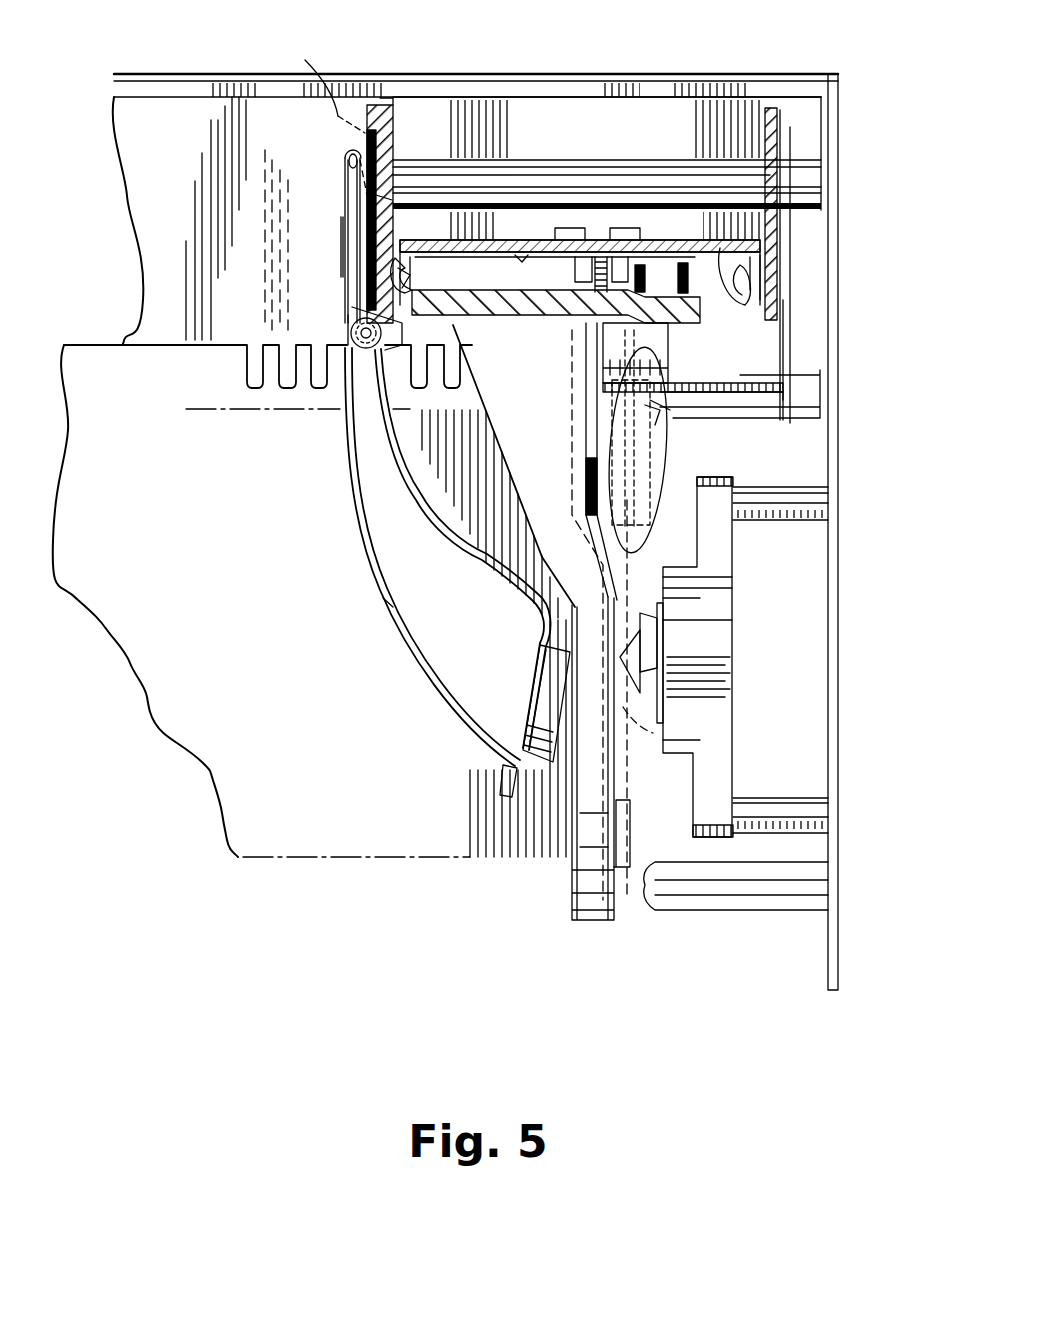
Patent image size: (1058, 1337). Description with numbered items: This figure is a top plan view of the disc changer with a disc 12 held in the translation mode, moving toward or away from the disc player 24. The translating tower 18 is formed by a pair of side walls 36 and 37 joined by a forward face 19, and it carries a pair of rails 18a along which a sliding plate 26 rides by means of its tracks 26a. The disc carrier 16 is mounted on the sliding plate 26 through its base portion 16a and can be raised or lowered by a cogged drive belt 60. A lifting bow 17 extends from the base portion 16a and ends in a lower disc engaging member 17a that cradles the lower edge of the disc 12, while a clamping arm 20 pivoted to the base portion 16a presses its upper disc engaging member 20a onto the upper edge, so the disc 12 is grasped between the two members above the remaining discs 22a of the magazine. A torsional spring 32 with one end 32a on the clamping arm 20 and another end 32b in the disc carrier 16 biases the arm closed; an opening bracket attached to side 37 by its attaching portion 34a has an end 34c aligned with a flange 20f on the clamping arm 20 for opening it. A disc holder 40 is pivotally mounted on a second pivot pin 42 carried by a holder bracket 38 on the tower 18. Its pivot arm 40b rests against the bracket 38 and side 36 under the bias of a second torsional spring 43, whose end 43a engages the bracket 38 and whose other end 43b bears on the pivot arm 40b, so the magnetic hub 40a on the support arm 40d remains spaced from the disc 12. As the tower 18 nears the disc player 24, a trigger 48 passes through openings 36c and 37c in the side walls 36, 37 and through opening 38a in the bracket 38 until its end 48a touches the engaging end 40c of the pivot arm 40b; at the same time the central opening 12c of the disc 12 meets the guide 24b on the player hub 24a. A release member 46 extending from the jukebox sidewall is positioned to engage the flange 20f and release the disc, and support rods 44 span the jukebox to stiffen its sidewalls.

The disc 12 is at (620, 768).
The opening in the center of the disc 12c is at (665, 740).
The disc carrier 16 is at (555, 509).
The base portion 16a is at (483, 367).
The lifting bow 17 is at (610, 783).
The lower disc engaging member 17a is at (630, 830).
The translating tower 18 is at (548, 247).
The rails 18a is at (390, 262).
The forward face 19 is at (520, 258).
The clamping arm 20 is at (648, 345).
The upper disc engaging member 20a is at (645, 444).
The flange 20f is at (650, 420).
The discs 22a is at (432, 873).
The disc player 24 is at (720, 610).
The center hub 24a is at (673, 615).
The guide 24b is at (670, 617).
The sliding plate 26 is at (440, 298).
The tracks 26a is at (423, 253).
The biasing member 32 is at (597, 525).
The end of biasing member 32a is at (790, 367).
The another end of biasing member 32b is at (570, 345).
The attaching portion 34a is at (783, 240).
The end of engaging portion 34c is at (655, 420).
The side wall 36 is at (390, 105).
The opening 36c is at (315, 84).
The side wall 37 is at (770, 108).
The opening 37c is at (790, 160).
The holder bracket 38 is at (375, 110).
The opening in bracket 38a is at (350, 200).
The disc holder 40 is at (395, 553).
The magnetic hub 40a is at (545, 672).
The pivot arm 40b is at (345, 212).
The engaging end 40c is at (348, 150).
The support arm 40d is at (395, 607).
The second pivot pin 42 is at (348, 350).
The biasing member 43 is at (347, 312).
The end of biasing member 43a is at (380, 355).
The another end of biasing member 43b is at (343, 250).
The support rods 44 is at (760, 895).
The release member 46 is at (790, 425).
The trigger member 48 is at (630, 173).
The end of trigger 48a is at (345, 175).
The cogged drive belt 60 is at (680, 262).